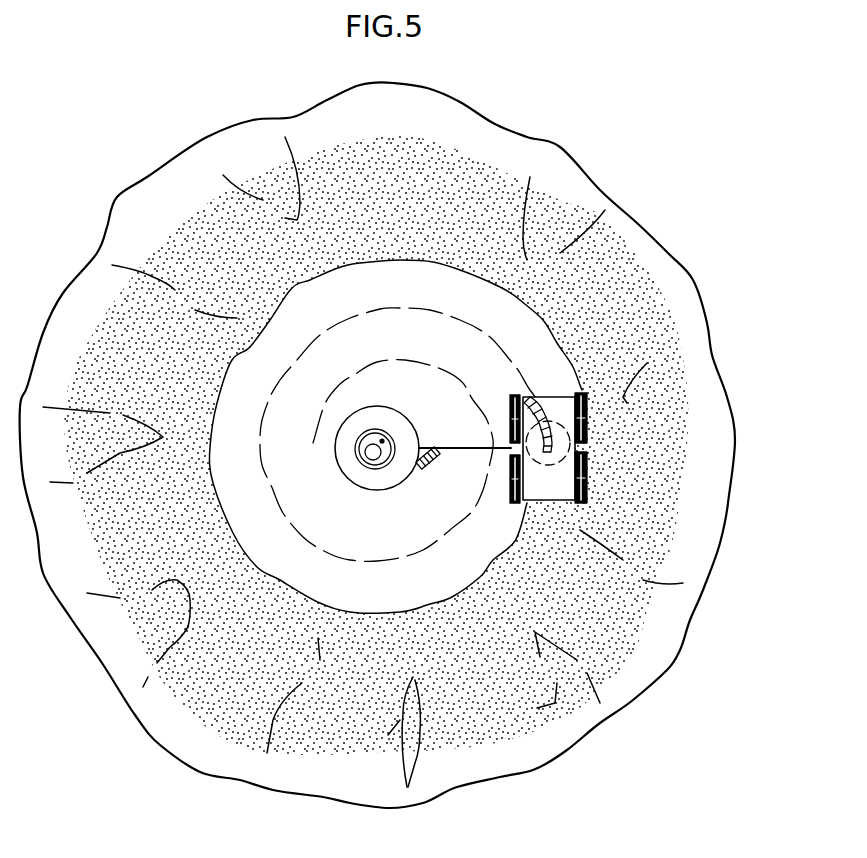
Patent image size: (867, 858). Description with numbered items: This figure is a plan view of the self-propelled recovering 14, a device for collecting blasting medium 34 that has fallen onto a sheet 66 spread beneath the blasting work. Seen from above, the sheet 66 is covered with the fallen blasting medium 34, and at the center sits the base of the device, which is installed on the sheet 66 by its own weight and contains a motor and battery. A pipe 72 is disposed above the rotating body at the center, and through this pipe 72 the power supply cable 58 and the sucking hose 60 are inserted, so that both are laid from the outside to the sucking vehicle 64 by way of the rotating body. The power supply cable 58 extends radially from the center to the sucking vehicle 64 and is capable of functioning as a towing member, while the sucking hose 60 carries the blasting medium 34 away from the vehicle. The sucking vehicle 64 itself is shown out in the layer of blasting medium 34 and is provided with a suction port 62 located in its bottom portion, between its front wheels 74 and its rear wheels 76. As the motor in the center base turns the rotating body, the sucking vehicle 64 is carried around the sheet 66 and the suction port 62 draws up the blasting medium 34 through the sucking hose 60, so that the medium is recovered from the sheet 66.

The self-propelled recovering 14 is at (632, 178).
The blasting medium 34 is at (627, 443).
The power supply cable 58 is at (384, 439).
The sucking hose 60 is at (376, 458).
The suction port 62 is at (595, 385).
The sucking vehicle 64 is at (540, 450).
The sheet 66 is at (628, 237).
The pipe 72 is at (356, 452).
The front wheels 74 is at (511, 492).
The rear wheels 76 is at (510, 407).